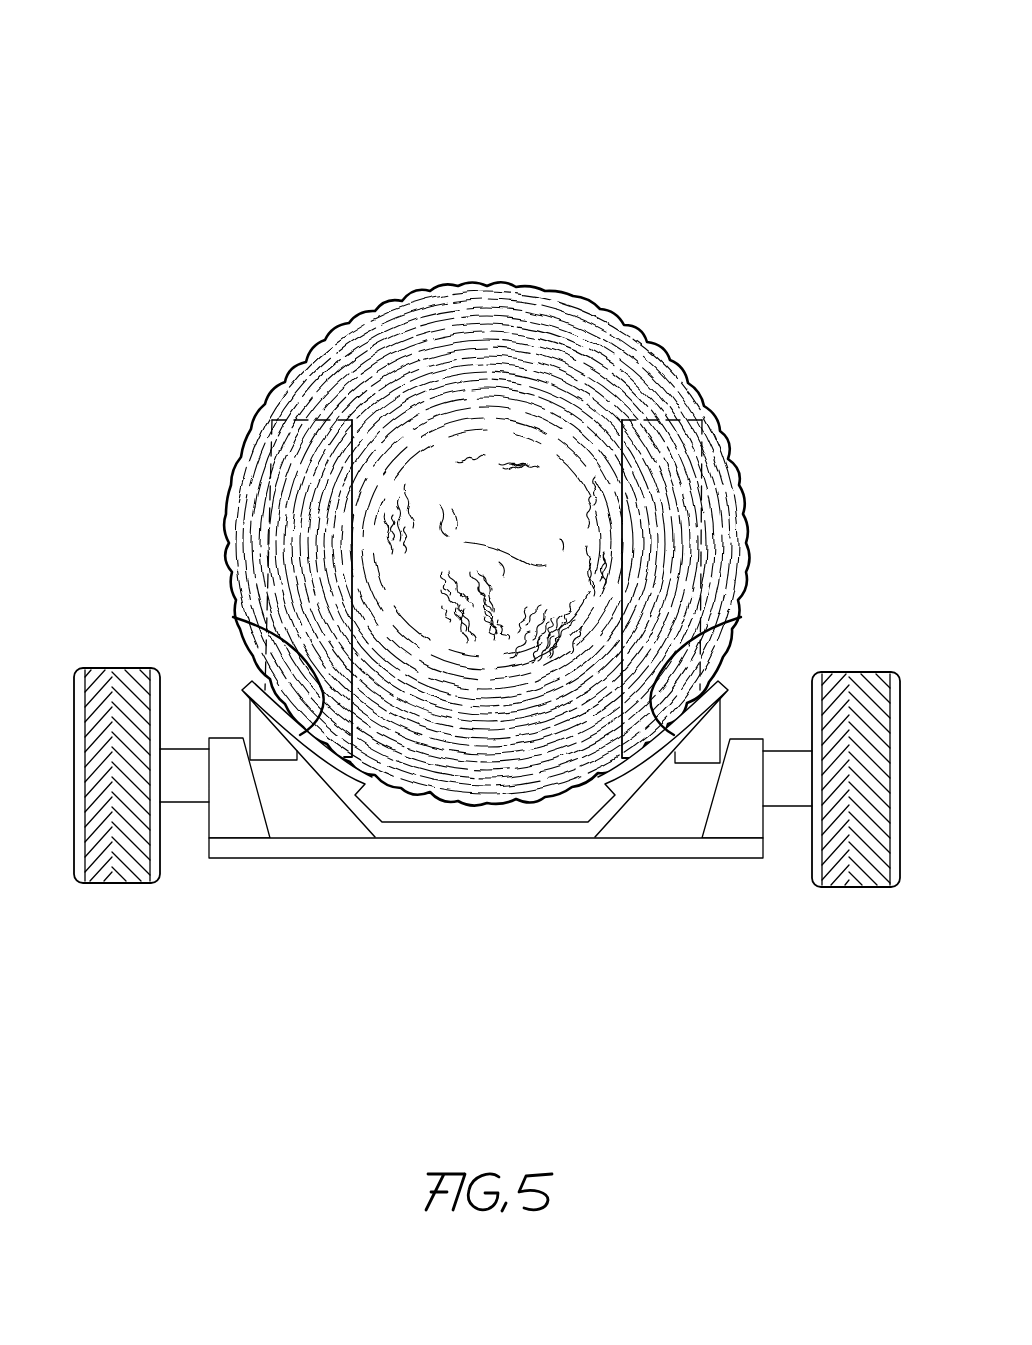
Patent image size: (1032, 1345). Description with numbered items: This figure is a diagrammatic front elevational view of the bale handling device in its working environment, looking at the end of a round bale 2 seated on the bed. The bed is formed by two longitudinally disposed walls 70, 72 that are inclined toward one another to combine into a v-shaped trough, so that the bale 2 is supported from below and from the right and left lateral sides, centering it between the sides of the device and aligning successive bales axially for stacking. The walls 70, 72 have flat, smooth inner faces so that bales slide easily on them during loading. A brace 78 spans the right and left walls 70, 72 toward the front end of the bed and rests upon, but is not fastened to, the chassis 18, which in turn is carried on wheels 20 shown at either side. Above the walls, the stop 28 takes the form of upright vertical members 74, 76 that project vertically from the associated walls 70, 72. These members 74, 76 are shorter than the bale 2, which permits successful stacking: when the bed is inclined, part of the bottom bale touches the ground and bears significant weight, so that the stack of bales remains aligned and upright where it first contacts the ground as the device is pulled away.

The bale 2 is at (515, 528).
The chassis 18 is at (377, 848).
The wheels 20 is at (122, 668).
The stop 28 is at (612, 168).
The wall 70 is at (233, 617).
The wall 72 is at (741, 617).
The upright vertical member 74 is at (243, 408).
The upright vertical member 76 is at (732, 408).
The brace 78 is at (612, 822).